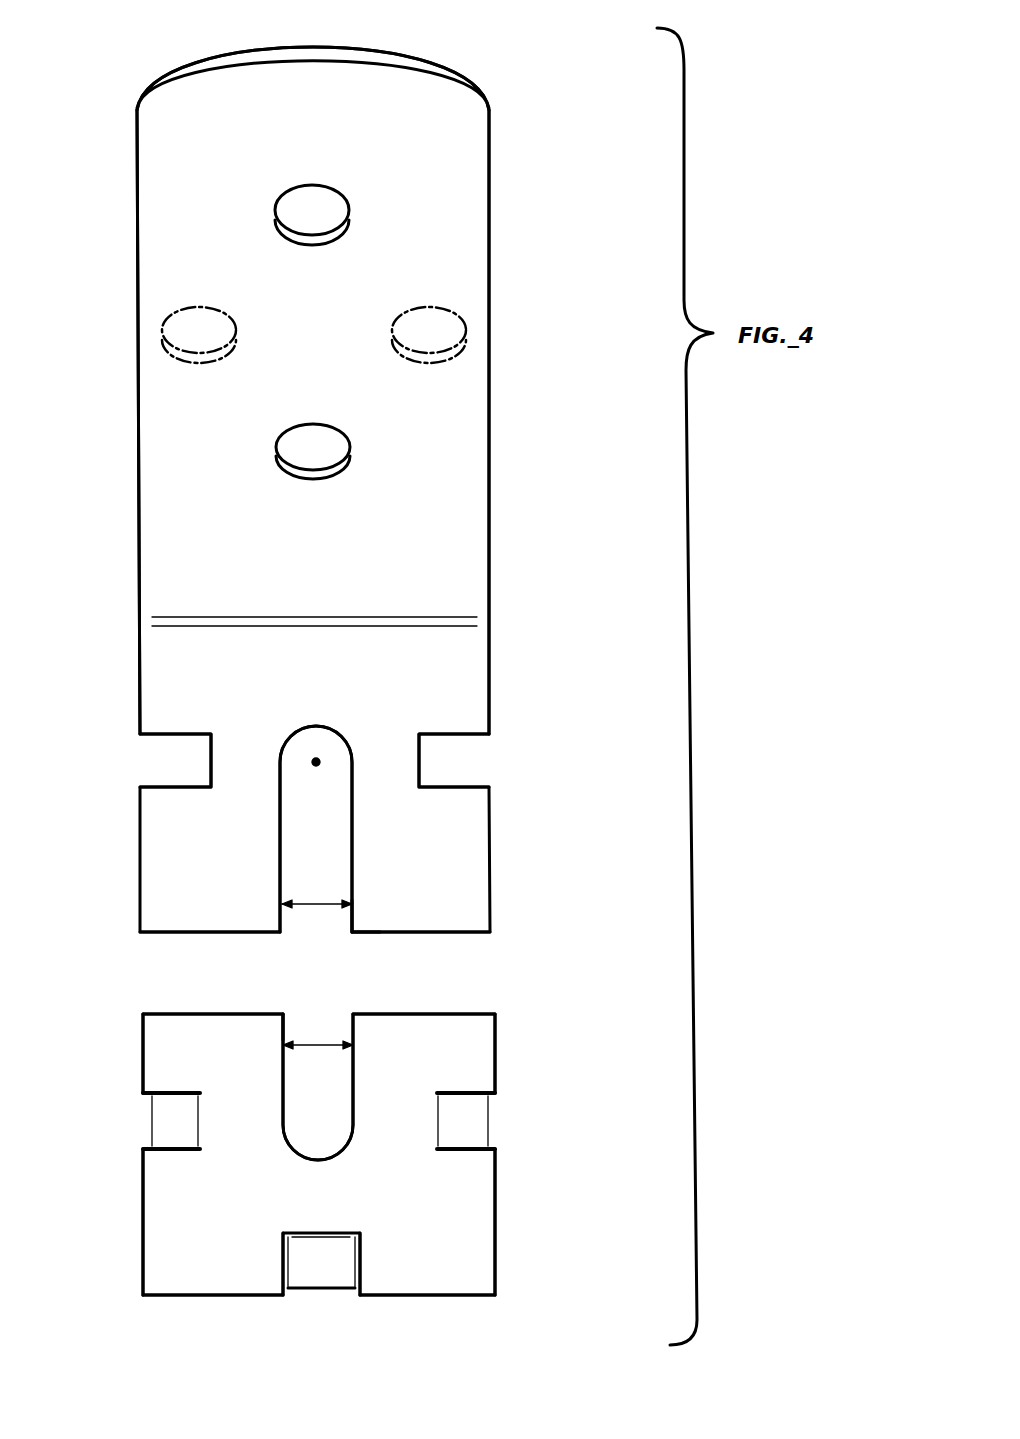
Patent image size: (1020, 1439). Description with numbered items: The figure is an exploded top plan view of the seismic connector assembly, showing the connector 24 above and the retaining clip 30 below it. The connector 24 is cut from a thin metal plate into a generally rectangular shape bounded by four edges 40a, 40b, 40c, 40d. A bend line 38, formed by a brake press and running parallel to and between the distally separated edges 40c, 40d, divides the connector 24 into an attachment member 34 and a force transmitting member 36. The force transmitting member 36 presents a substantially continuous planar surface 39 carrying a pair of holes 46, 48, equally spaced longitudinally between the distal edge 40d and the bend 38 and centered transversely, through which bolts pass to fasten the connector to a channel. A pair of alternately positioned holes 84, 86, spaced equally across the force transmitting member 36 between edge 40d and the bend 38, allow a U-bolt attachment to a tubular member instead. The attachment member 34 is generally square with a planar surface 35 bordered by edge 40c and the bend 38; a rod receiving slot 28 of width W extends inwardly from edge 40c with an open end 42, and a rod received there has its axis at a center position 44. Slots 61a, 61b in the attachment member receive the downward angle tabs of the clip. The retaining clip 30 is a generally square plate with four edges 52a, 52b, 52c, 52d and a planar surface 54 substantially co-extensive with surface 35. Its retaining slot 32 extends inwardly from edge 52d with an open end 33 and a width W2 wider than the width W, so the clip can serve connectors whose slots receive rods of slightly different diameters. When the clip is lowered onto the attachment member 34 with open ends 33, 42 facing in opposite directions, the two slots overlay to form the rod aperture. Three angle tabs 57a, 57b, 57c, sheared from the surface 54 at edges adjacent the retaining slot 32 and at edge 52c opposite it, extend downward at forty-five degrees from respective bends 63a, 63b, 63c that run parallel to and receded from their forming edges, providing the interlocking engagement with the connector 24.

The connector 24 is at (520, 105).
The edge 40d is at (290, 42).
The edge 40a is at (122, 622).
The edge 40b is at (498, 621).
The edge 40c is at (212, 942).
The hole 46 is at (325, 210).
The hole 48 is at (318, 432).
The hole 84 is at (188, 305).
The hole 86 is at (412, 305).
The planar surface 39 is at (312, 347).
The force transmitting member 36 is at (465, 430).
The bend line 38 is at (337, 620).
The attachment member 34 is at (476, 687).
The planar surface 35 is at (314, 680).
The center position 44 is at (316, 762).
The slot 61a is at (167, 760).
The slot 61b is at (454, 760).
The rod receiving slot 28 is at (322, 811).
The width W is at (313, 904).
The open end 42 is at (346, 916).
The retaining clip 30 is at (515, 1053).
The edge 52d is at (452, 1013).
The edge 52a is at (134, 1200).
The edge 52b is at (506, 1211).
The edge 52c is at (395, 1308).
The retaining slot 32 is at (320, 1126).
The open end 33 is at (297, 1025).
The width W2 is at (322, 1045).
The angle tab 57a is at (152, 1115).
The angle tab 57b is at (473, 1125).
The angle tab 57c is at (322, 1275).
The bend 63a is at (200, 1122).
The bend 63b is at (437, 1122).
The bend 63c is at (333, 1237).
The planar surface 54 is at (324, 1211).